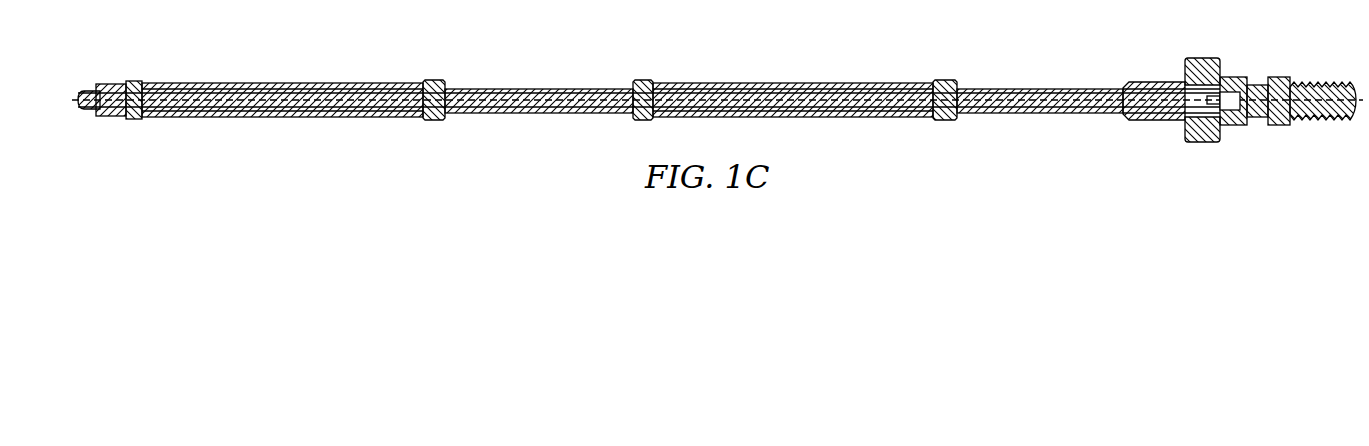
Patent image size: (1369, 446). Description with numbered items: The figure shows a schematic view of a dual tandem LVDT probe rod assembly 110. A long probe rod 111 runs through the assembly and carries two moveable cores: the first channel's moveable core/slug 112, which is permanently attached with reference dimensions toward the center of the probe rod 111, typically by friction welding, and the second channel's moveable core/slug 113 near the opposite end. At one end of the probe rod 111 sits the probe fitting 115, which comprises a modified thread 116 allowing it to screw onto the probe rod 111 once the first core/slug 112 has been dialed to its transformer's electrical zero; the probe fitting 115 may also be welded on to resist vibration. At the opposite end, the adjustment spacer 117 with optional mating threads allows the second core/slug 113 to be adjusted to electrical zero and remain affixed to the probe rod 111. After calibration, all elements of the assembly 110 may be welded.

The probe rod assembly 110 is at (190, 30).
The probe rod 111 is at (548, 112).
The first channel's moveable core/slug 112 is at (812, 118).
The second channel's moveable core/slug 113 is at (232, 118).
The probe fitting 115 is at (1270, 77).
The modified thread 116 is at (1138, 120).
The adjustment spacer 117 is at (127, 83).